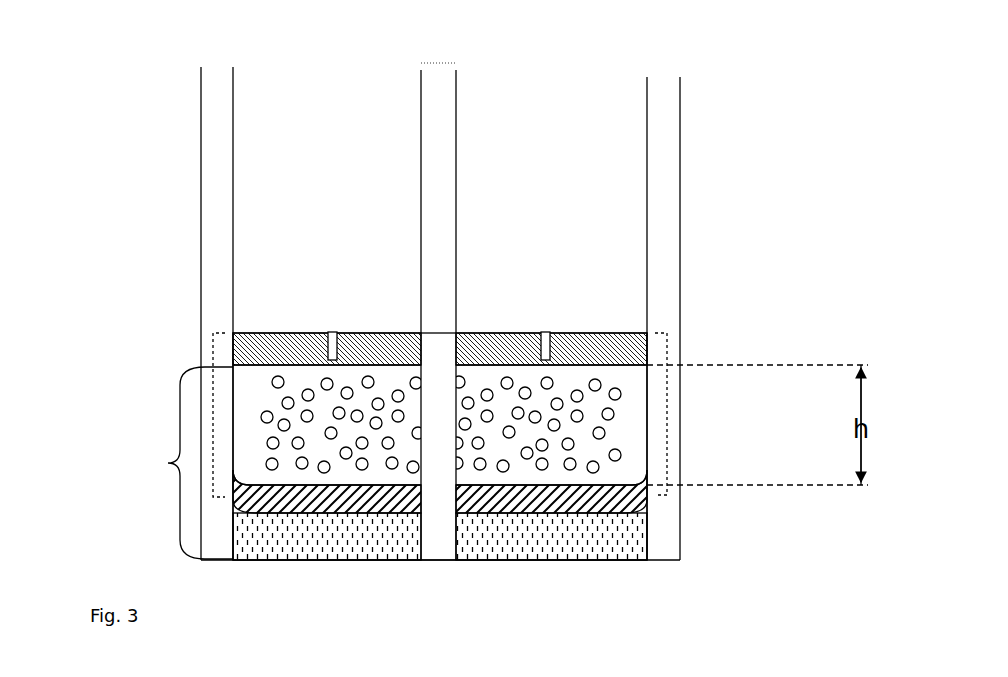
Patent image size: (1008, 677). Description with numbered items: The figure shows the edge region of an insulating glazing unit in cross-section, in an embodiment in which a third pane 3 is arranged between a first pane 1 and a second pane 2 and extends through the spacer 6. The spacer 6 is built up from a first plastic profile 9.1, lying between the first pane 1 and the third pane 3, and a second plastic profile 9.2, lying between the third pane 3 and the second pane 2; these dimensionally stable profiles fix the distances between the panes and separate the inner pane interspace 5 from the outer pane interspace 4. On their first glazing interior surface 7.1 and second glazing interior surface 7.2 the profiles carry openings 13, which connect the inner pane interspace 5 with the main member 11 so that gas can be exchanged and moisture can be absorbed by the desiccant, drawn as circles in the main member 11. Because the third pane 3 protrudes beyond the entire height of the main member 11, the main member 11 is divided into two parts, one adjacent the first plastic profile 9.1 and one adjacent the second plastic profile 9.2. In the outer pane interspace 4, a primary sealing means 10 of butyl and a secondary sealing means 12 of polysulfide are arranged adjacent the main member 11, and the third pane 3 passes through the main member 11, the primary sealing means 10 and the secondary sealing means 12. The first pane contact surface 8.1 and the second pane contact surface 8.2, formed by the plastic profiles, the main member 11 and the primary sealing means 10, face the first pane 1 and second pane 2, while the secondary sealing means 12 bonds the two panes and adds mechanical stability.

The first pane 1 is at (212, 168).
The second pane 2 is at (663, 180).
The third pane 3 is at (443, 90).
The outer pane interspace 4 is at (168, 463).
The inner pane interspace 5 is at (278, 130).
The spacer 6 is at (651, 329).
The first glazing interior surface 7.1 is at (288, 322).
The second glazing interior surface 7.2 is at (595, 322).
The first pane contact surface 8.1 is at (213, 417).
The second pane contact surface 8.2 is at (667, 415).
The first plastic profile 9.1 is at (390, 352).
The second plastic profile 9.2 is at (500, 352).
The primary sealing means 10 is at (647, 501).
The main member 11 is at (262, 392).
The secondary sealing means 12 is at (630, 541).
The openings 13 is at (333, 358).